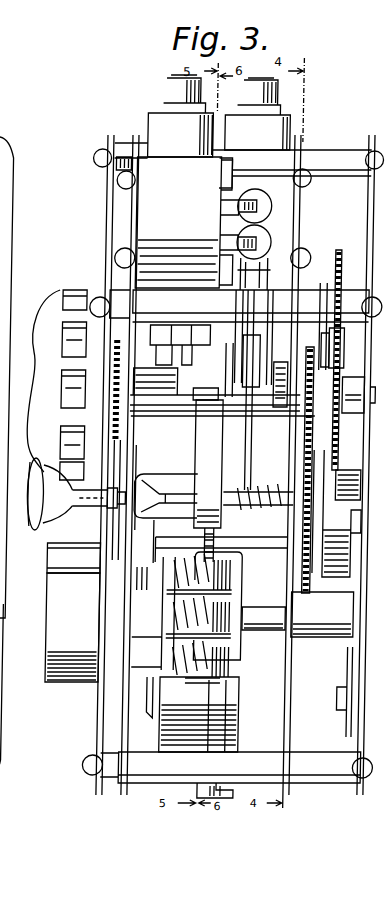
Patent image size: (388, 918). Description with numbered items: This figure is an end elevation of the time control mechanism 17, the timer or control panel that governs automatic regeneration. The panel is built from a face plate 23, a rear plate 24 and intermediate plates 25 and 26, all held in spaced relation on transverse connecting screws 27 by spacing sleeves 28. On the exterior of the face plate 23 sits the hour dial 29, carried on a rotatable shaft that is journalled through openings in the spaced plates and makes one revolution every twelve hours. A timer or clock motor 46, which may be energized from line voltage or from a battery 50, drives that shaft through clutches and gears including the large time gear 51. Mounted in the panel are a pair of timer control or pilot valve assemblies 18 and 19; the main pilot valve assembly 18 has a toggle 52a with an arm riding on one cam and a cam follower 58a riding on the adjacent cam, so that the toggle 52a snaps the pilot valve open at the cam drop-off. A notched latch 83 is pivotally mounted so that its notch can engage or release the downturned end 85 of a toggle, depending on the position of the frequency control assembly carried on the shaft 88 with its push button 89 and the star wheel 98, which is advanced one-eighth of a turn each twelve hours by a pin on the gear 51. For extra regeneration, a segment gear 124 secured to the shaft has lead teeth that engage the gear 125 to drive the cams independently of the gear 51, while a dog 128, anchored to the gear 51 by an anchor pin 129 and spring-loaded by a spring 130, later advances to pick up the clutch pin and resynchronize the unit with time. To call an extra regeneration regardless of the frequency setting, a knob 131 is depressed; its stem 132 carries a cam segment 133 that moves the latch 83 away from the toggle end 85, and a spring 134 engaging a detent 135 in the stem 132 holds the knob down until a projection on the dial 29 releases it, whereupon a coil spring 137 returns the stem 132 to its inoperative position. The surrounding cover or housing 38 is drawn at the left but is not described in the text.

The time control mechanism 17 is at (20, 157).
The main pilot valve assembly 18 is at (141, 124).
The pilot valve assembly 19 is at (299, 123).
The face plate 23 is at (108, 214).
The rear plate 24 is at (369, 215).
The intermediate plate 25 is at (139, 229).
The intermediate plate 26 is at (303, 163).
The transverse connecting screws 27 is at (97, 163).
The spacing sleeves 28 is at (285, 163).
The hour dial 29 is at (81, 282).
The cover 38 is at (44, 340).
The timer or clock motor 46 is at (196, 703).
The battery 50 is at (247, 783).
The gear 51 is at (331, 259).
The toggle 52a is at (180, 400).
The cam follower 58a is at (266, 264).
The notched latch 83 is at (224, 540).
The downturned end 85 is at (216, 473).
The shaft 88 is at (257, 613).
The push button 89 is at (84, 626).
The star wheel 98 is at (346, 664).
The segment gear 124 is at (305, 362).
The gear 125 is at (316, 463).
The dog 128 is at (334, 355).
The anchor pin 129 is at (325, 340).
The spring 130 is at (323, 303).
The knob 131 is at (36, 526).
The stem 132 is at (99, 508).
The cam segment 133 is at (157, 481).
The spring 134 is at (137, 464).
The detent 135 is at (108, 556).
The coil spring 137 is at (245, 492).